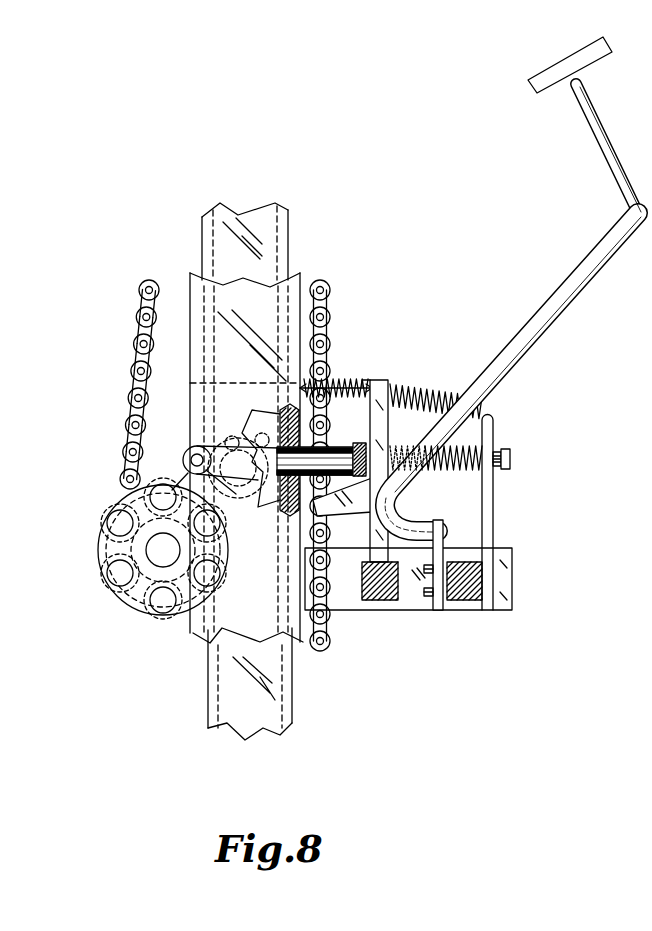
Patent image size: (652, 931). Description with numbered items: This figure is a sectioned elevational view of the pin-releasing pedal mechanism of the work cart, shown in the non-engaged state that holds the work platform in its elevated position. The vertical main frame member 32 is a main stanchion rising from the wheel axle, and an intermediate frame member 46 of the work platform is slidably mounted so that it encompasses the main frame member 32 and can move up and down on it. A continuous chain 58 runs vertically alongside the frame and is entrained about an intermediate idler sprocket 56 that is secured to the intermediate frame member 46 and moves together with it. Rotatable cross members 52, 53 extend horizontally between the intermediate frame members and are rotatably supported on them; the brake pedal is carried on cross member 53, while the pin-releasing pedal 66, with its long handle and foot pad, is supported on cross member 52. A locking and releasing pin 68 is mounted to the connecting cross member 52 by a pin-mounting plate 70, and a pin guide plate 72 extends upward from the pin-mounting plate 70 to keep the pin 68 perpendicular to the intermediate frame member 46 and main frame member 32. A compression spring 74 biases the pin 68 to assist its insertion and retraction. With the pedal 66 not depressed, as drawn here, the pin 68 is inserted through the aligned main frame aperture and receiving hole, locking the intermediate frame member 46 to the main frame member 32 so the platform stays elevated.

The main frame member 32 is at (208, 712).
The intermediate frame member 46 is at (192, 632).
The rotatable cross member 52 is at (455, 600).
The rotatable cross member 53 is at (375, 599).
The intermediate idler sprocket 56 is at (131, 607).
The continuous chain 58 is at (145, 280).
The pin-releasing pedal 66 is at (540, 323).
The locking and releasing pin 68 is at (512, 459).
The pin-mounting plate 70 is at (398, 610).
The pin guide plate 72 is at (493, 513).
The compression spring 74 is at (457, 474).